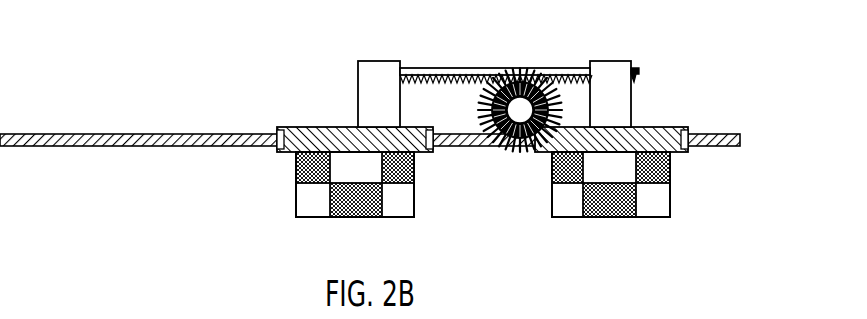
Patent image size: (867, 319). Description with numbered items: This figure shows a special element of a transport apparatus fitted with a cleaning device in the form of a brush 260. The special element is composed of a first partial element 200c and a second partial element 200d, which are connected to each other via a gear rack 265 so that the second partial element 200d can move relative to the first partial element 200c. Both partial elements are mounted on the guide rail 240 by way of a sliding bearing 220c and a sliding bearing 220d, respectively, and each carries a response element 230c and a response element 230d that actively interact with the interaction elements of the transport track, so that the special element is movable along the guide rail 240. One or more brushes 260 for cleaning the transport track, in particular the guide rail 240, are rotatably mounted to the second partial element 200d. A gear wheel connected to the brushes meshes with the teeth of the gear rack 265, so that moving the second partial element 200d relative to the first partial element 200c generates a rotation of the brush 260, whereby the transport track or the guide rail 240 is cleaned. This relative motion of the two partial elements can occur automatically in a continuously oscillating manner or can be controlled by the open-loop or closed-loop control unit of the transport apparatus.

The guide rail 240 is at (14, 133).
The first partial element 200c is at (312, 121).
The second partial element 200d is at (640, 119).
The sliding bearing 220c is at (429, 153).
The sliding bearing 220d is at (683, 153).
The response element 230c is at (350, 217).
The response element 230d is at (607, 217).
The brush 260 is at (479, 102).
The gear rack 265 is at (481, 68).